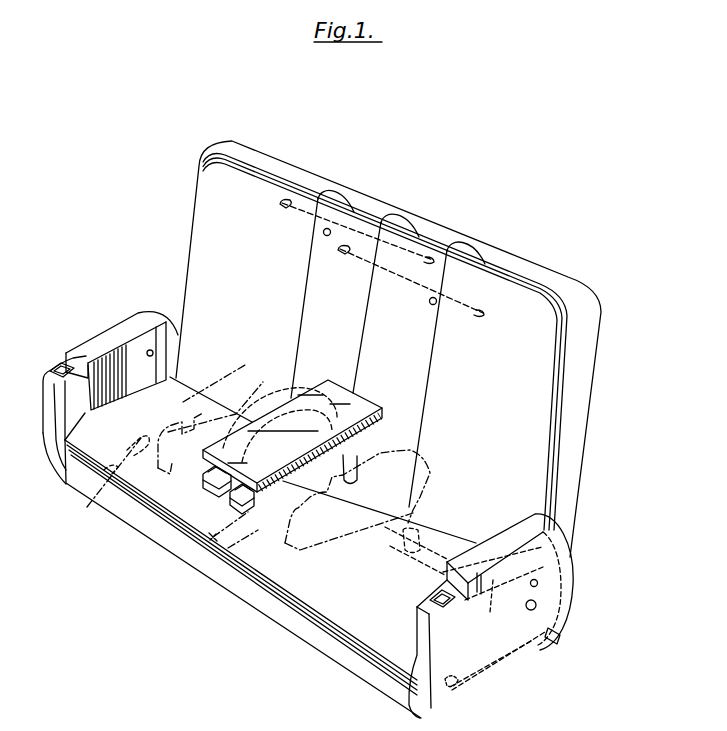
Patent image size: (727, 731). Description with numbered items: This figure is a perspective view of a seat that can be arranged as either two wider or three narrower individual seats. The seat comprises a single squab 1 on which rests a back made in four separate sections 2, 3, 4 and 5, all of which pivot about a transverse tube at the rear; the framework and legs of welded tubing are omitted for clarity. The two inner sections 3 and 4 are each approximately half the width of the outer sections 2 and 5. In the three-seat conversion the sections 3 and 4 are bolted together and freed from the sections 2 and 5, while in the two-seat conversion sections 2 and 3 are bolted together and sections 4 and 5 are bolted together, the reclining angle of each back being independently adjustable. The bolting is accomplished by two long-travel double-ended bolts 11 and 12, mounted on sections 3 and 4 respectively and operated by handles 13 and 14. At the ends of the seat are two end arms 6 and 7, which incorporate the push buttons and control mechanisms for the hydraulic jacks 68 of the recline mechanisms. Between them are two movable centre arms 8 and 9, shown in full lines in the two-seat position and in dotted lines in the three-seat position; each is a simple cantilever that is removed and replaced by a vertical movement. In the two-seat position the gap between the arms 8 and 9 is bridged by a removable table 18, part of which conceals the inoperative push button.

The squab 1 is at (284, 578).
The back section 2 is at (268, 202).
The back section 3 is at (348, 237).
The back section 4 is at (408, 262).
The back section 5 is at (500, 288).
The end arm 6 is at (121, 328).
The end arm 7 is at (533, 550).
The centre arm 8 is at (277, 410).
The centre arm 9 is at (382, 450).
The double-ended bolt 11 is at (287, 208).
The double-ended bolt 12 is at (387, 273).
The handle 13 is at (323, 233).
The handle 14 is at (429, 302).
The removable table 18 is at (353, 392).
The hydraulic jack 68 is at (95, 497).